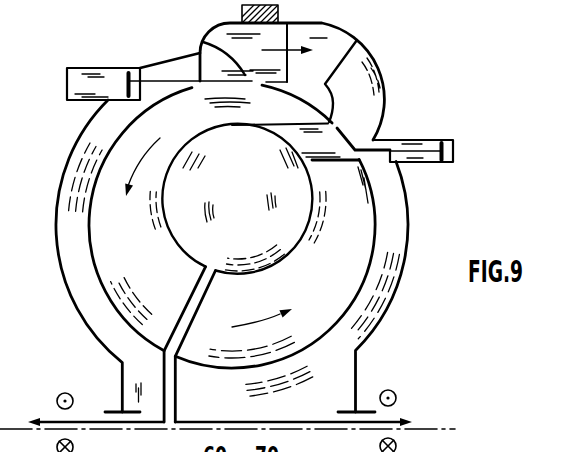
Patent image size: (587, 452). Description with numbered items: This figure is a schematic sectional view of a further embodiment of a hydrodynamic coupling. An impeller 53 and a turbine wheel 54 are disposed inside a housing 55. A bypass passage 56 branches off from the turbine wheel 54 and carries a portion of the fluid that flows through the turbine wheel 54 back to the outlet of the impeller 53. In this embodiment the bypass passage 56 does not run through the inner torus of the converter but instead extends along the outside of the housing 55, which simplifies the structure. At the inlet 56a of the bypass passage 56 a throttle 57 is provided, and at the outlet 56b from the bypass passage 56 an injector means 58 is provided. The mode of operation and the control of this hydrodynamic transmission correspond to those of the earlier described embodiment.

The impeller 53 is at (317, 288).
The turbine wheel 54 is at (113, 200).
The housing 55 is at (78, 313).
The bypass passage 56 is at (396, 68).
The inlet 56a is at (203, 42).
The outlet 56b is at (337, 130).
The throttle 57 is at (172, 81).
The injector means 58 is at (385, 169).